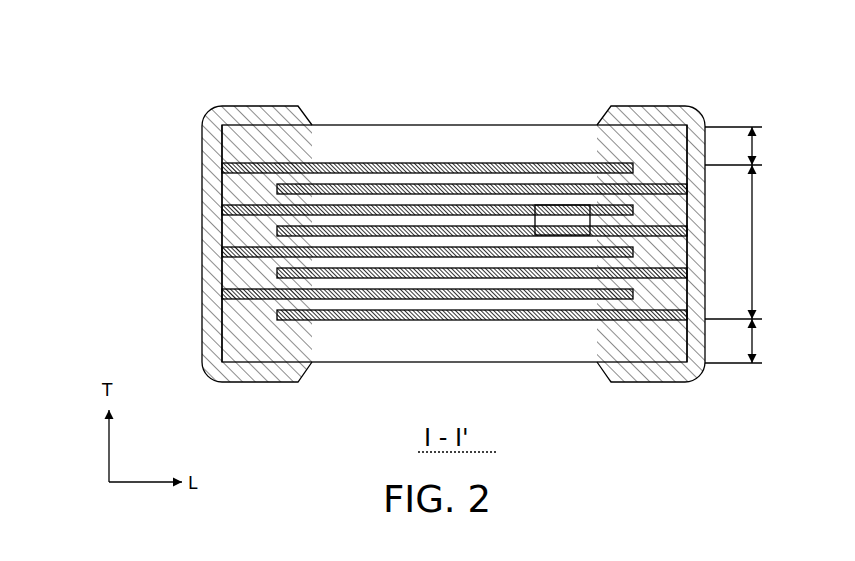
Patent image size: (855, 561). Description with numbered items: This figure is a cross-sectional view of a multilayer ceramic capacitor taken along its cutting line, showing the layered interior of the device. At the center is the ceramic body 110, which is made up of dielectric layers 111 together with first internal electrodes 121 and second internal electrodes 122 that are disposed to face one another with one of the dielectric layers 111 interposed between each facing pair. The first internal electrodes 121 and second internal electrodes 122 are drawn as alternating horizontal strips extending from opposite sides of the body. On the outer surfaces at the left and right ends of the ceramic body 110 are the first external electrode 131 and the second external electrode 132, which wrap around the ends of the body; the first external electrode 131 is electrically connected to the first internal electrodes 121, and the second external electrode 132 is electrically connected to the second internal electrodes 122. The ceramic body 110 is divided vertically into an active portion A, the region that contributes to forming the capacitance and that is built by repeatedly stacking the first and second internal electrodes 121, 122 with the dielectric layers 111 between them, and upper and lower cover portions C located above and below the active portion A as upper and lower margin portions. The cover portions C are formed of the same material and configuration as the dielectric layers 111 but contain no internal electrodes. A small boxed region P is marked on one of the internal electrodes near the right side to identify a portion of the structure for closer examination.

The ceramic body 110 is at (455, 125).
The dielectric layer 111 is at (235, 178).
The first internal electrode 121 is at (262, 165).
The second internal electrode 122 is at (288, 190).
The first external electrode 131 is at (262, 108).
The second external electrode 132 is at (653, 107).
The region P (enlarged portion) P is at (553, 205).
The active portion A is at (762, 242).
The cover portion C is at (738, 245).